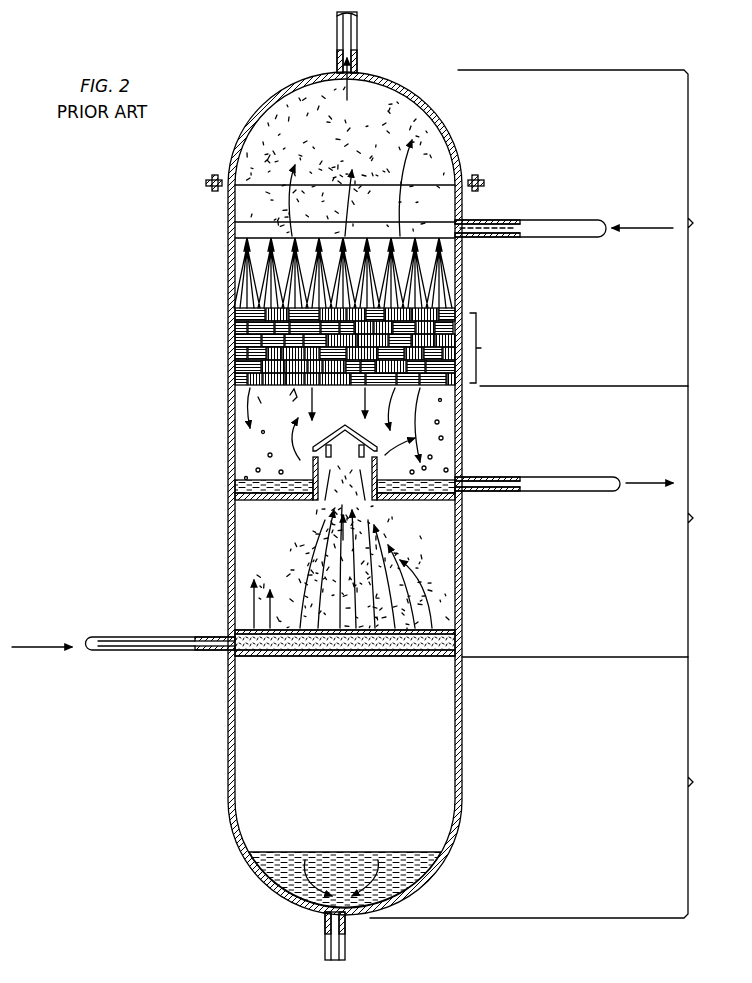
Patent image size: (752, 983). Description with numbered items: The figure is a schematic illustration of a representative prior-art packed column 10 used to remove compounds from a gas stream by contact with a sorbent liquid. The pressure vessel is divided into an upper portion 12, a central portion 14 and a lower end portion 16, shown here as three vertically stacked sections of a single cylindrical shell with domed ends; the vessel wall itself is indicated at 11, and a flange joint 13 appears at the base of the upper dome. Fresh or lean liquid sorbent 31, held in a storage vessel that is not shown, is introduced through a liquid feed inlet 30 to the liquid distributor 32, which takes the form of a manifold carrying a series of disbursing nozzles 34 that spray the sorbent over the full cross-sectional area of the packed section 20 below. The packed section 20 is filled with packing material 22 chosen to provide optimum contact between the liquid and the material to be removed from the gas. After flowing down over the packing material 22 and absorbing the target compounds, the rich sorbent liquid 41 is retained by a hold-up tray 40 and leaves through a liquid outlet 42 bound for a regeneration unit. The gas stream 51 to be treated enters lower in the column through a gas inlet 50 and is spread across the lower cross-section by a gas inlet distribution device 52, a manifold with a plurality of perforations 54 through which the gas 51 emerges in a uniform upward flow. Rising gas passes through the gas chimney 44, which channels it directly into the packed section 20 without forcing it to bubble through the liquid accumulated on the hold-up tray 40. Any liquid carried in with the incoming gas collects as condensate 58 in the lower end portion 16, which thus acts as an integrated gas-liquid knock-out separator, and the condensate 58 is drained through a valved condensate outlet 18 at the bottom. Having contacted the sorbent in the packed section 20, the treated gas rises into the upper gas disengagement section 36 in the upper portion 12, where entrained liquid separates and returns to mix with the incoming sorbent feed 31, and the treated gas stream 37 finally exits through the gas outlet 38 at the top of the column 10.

The packed column 10 is at (138, 410).
The vessel shell 11 is at (262, 112).
The upper portion 12 is at (590, 228).
The flange 13 is at (212, 177).
The central portion 14 is at (592, 521).
The lower end portion 16 is at (543, 787).
The valved condensate outlet 18 is at (346, 950).
The packed section 20 is at (342, 346).
The packing material 22 is at (262, 338).
The liquid feed inlet 30 is at (537, 224).
The lean liquid sorbent 31 is at (638, 226).
The liquid distributor 32 is at (233, 237).
The disbursing nozzles 34 is at (248, 222).
The upper gas disengagement section 36 is at (446, 120).
The treated gas stream 37 is at (345, 86).
The gas outlet 38 is at (358, 40).
The hold-up tray 40 is at (240, 502).
The rich sorbent liquid 41 is at (636, 482).
The liquid outlet 42 is at (588, 492).
The gas chimney 44 is at (313, 466).
The gas inlet 50 is at (138, 634).
The gas stream 51 is at (32, 650).
The gas inlet distribution device 52 is at (272, 658).
The perforations 54 is at (448, 628).
The condensate 58 is at (300, 850).